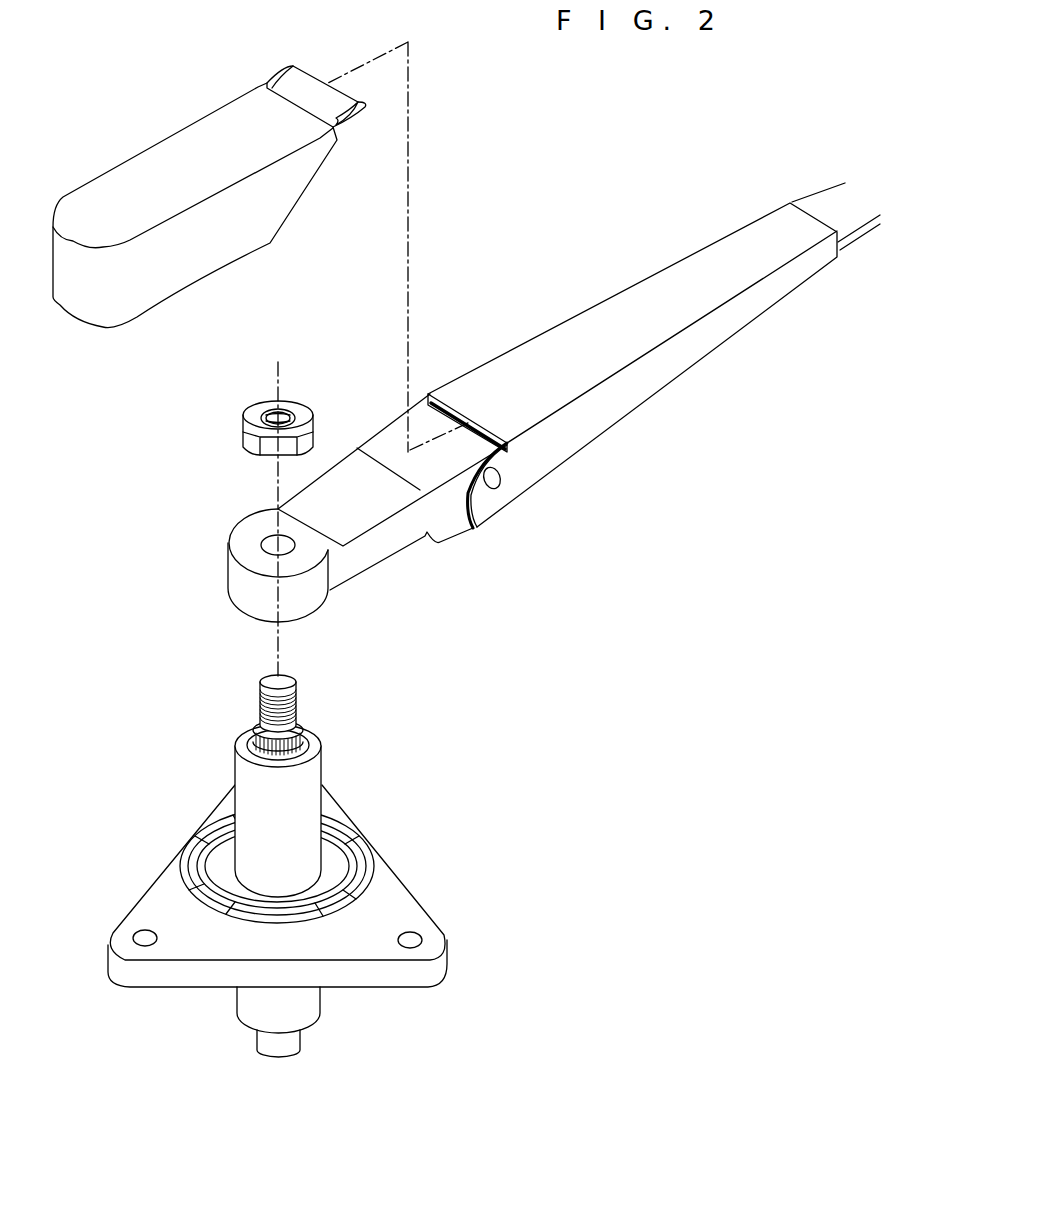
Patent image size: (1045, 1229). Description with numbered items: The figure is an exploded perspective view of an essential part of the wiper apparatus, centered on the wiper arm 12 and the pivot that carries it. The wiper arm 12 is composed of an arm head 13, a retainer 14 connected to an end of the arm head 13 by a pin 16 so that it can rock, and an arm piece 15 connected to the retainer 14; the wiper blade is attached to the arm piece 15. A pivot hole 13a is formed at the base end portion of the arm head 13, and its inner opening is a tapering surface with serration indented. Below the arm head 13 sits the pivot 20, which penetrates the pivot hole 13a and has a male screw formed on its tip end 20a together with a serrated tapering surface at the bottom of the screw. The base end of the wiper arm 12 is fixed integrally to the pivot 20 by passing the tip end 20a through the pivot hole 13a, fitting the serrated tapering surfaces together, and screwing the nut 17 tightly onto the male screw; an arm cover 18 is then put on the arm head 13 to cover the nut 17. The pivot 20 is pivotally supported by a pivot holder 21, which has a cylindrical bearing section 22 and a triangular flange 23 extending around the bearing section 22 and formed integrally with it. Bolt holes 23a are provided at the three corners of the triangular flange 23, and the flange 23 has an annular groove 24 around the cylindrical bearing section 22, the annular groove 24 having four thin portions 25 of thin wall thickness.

The wiper arm 12 is at (519, 384).
The arm head 13 is at (331, 516).
The pivot hole 13a is at (266, 540).
The retainer 14 is at (632, 392).
The arm piece 15 is at (850, 240).
The pin 16 is at (497, 487).
The nut 17 is at (247, 420).
The arm cover 18 is at (162, 173).
The pivot 20 is at (273, 705).
The tip end 20a is at (298, 695).
The pivot holder 21 is at (286, 854).
The cylindrical bearing section 22 is at (322, 772).
The triangular flange 23 is at (286, 921).
The bolt holes 23a is at (138, 932).
The annular groove 24 is at (186, 866).
The thin portions 25 is at (217, 838).